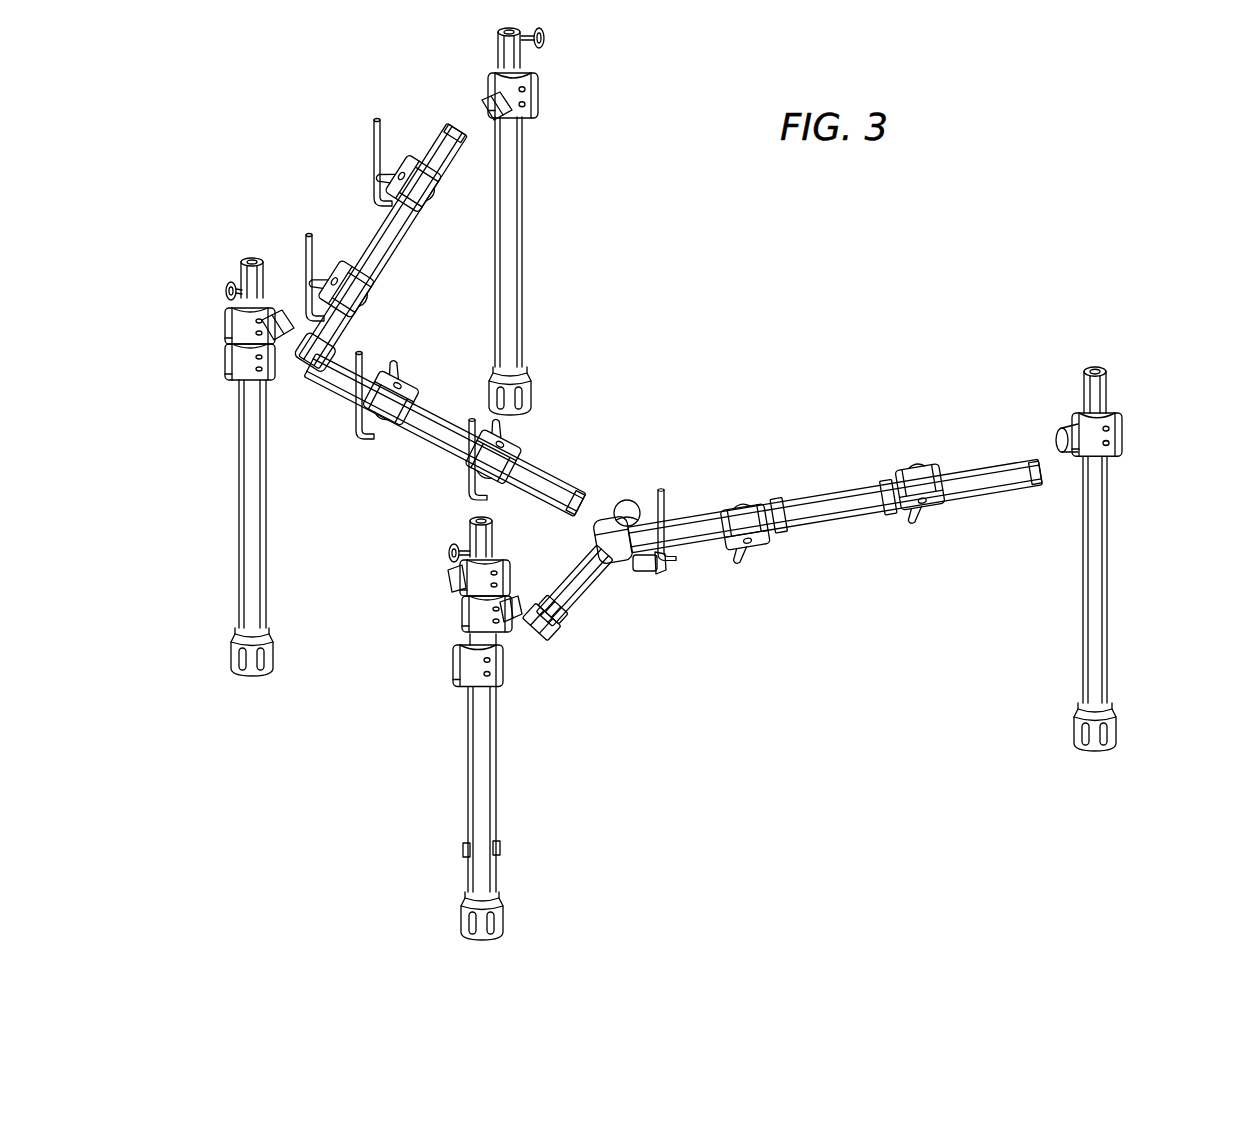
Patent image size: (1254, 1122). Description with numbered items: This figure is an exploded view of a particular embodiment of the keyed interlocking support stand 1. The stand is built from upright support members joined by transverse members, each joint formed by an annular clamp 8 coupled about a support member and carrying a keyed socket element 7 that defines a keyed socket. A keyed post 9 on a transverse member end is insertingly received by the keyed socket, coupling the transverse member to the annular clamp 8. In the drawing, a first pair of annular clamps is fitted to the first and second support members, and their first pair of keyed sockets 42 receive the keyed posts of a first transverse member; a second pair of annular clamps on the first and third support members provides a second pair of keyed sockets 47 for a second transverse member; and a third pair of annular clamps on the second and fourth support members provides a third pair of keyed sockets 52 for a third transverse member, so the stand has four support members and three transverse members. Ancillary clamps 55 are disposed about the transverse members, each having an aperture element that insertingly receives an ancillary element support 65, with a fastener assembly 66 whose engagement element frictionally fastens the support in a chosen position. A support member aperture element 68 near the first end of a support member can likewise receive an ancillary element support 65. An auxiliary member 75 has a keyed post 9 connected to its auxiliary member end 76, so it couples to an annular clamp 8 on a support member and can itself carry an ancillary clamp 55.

The keyed interlocking support stand 1 is at (838, 255).
The keyed socket element 7 is at (512, 118).
The annular clamp 8 is at (440, 677).
The keyed post 9 is at (533, 639).
The first pair of keyed sockets 42 is at (288, 336).
The second pair of keyed sockets 47 is at (484, 110).
The third pair of keyed sockets 52 is at (518, 606).
The ancillary clamp 55 is at (424, 361).
The ancillary element support 65 is at (375, 136).
The fastener assembly 66 is at (545, 36).
The support member aperture element 68 is at (498, 34).
The auxiliary member 75 is at (589, 591).
The auxiliary member end 76 is at (556, 633).